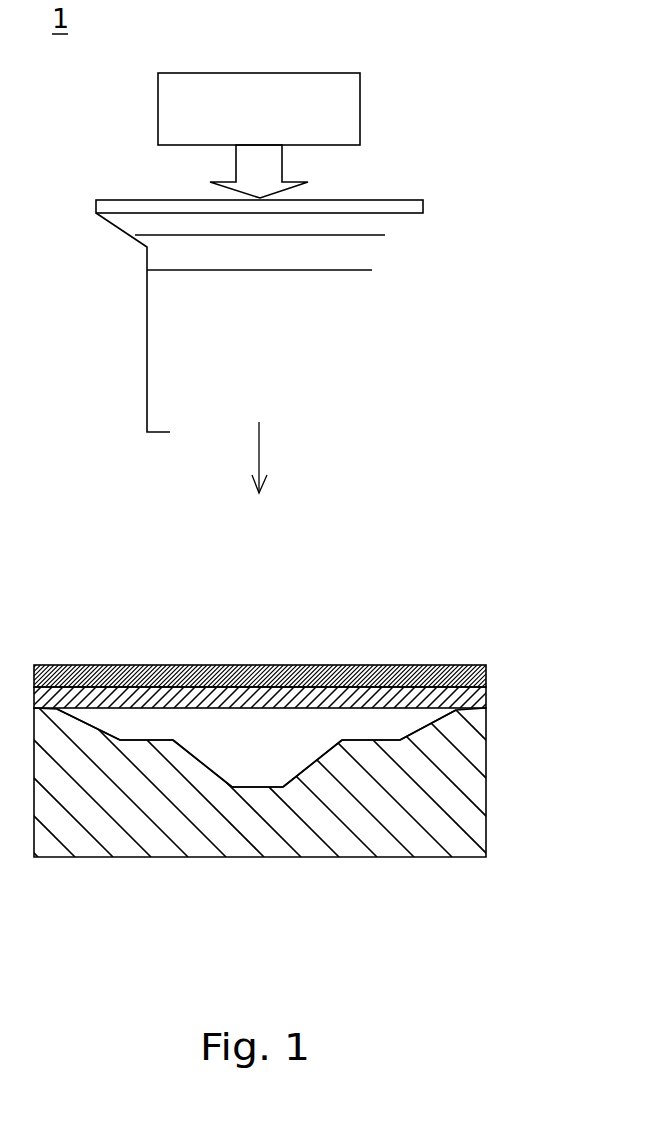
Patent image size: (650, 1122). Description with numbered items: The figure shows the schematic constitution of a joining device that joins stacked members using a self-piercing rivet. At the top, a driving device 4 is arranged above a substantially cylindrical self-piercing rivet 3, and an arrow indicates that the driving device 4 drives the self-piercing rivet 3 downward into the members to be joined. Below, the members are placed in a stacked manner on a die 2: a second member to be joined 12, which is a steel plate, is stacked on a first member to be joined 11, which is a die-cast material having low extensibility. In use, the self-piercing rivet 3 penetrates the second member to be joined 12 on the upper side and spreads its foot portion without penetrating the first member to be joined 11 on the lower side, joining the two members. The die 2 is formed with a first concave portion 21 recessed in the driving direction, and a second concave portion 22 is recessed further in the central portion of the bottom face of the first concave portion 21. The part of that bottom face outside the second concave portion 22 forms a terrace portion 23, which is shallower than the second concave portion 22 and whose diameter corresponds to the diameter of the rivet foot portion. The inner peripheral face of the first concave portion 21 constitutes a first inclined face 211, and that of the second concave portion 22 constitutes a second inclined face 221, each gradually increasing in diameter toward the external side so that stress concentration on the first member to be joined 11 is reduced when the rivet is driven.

The die 2 is at (478, 782).
The self-piercing rivet 3 is at (395, 205).
The driving device 4 is at (362, 106).
The first member to be joined 11 is at (487, 697).
The second member to be joined 12 is at (487, 670).
The first concave portion 21 is at (163, 723).
The second concave portion 22 is at (243, 767).
The terrace portion 23 is at (155, 738).
The first inclined face 211 is at (98, 727).
The second inclined face 221 is at (207, 760).